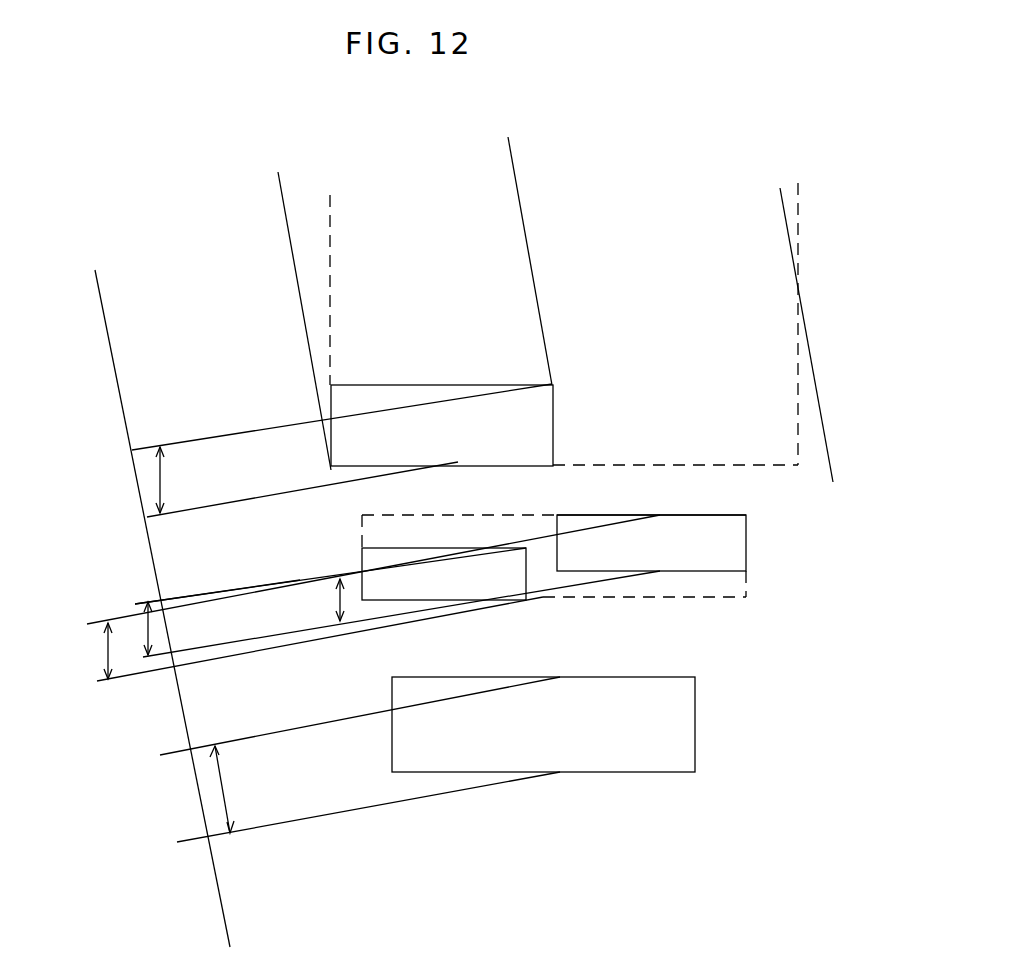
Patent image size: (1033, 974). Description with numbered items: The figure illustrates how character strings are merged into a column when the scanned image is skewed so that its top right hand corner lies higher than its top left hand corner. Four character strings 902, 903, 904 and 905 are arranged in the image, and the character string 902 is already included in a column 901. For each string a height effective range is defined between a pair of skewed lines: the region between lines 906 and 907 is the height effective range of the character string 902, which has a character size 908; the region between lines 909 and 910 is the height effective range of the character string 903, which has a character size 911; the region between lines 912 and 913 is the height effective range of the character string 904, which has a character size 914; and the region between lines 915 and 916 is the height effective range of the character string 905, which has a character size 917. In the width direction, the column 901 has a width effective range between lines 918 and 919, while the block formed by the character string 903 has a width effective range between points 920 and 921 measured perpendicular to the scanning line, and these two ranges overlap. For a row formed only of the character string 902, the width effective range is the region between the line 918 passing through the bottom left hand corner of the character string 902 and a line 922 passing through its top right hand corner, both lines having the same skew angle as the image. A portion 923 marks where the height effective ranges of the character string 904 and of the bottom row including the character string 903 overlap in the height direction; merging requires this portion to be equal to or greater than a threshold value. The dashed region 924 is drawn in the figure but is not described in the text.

The column 901 is at (802, 440).
The character string 902 is at (537, 422).
The character string 903 is at (740, 551).
The character string 904 is at (460, 576).
The character string 905 is at (700, 725).
The line 906 is at (203, 439).
The line 907 is at (226, 503).
The character size 908 is at (158, 486).
The line 909 is at (260, 589).
The line 910 is at (313, 630).
The character size 911 is at (108, 652).
The line 912 is at (185, 596).
The line 913 is at (222, 662).
The character size 914 is at (148, 632).
The line 915 is at (313, 726).
The line 916 is at (343, 812).
The character size 917 is at (222, 790).
The line 918 is at (282, 196).
The line 919 is at (781, 188).
The point 920 is at (556, 516).
The point 921 is at (747, 515).
The line 922 is at (523, 217).
The portion 923 is at (340, 578).
The virtual light receiving region 924 is at (543, 597).